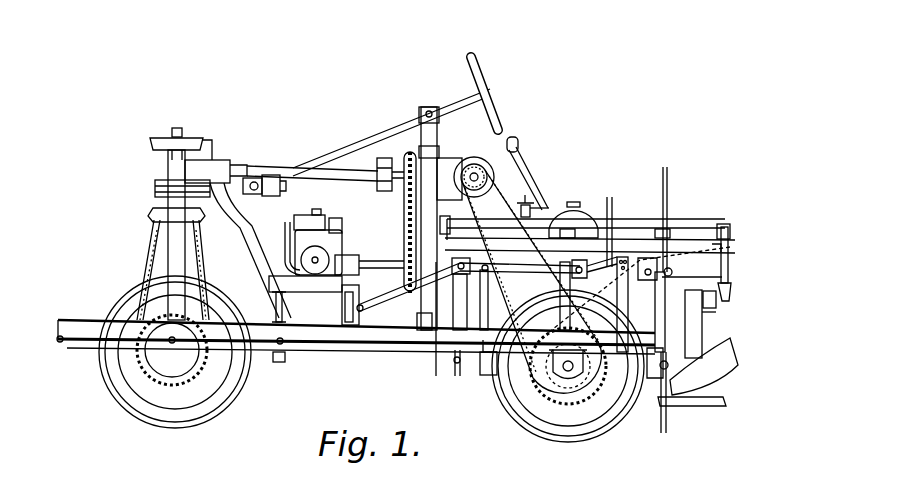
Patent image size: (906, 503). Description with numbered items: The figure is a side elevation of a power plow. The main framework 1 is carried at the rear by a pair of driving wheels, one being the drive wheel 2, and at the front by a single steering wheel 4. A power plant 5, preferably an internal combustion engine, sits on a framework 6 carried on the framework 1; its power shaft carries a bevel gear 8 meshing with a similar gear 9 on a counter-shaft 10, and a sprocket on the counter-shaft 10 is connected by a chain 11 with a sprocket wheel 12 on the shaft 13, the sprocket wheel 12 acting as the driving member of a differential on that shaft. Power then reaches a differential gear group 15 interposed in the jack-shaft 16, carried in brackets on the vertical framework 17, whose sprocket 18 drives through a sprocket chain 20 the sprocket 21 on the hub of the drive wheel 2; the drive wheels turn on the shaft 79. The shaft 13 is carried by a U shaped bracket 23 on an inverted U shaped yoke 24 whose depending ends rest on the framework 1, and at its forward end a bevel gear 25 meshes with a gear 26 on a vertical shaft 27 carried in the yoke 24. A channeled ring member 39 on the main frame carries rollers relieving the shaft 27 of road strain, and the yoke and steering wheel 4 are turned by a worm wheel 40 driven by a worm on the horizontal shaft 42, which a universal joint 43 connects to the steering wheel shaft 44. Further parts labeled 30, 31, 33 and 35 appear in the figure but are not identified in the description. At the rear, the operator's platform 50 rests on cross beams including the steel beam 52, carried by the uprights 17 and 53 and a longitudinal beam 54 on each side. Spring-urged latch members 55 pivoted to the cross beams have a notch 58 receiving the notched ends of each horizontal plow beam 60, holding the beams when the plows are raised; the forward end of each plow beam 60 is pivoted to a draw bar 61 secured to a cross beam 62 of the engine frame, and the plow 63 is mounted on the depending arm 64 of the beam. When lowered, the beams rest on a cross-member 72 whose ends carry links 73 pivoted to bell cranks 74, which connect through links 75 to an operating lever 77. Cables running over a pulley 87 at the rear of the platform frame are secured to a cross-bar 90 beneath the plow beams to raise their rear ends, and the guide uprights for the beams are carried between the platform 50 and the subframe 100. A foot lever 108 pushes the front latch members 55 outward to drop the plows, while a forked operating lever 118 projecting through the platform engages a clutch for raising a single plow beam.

The framework 1 is at (79, 322).
The driving wheel 2 is at (567, 437).
The steering wheel 4 is at (207, 411).
The power plant 5 is at (340, 243).
The framework 6 is at (312, 286).
The bevel gear 8 is at (280, 271).
The bevel gear 9 is at (345, 316).
The counter-shaft 10 is at (372, 256).
The chain 11 is at (404, 200).
The sprocket wheel 12 is at (411, 144).
The shaft 13 is at (328, 170).
The differential gear group 15 is at (470, 155).
The jack-shaft 16 is at (478, 174).
The vertical framework 17 is at (423, 330).
The sprocket 18 is at (520, 158).
The sprocket chain 20 is at (490, 372).
The sprocket 21 is at (587, 382).
The U shaped bracket 23 is at (208, 170).
The inverted U shaped yoke 24 is at (162, 208).
The bevel gear 25 is at (210, 141).
The bevel gear 26 is at (192, 140).
The vertical shaft 27 is at (177, 126).
The fork head 30 is at (150, 212).
The fork arm 31 is at (196, 230).
The fork chain 33 is at (152, 236).
The wheel hub 35 is at (172, 350).
The channeled ring member 39 is at (272, 354).
The worm wheel 40 is at (157, 187).
The horizontal shaft 42 is at (246, 179).
The universal joint 43 is at (270, 196).
The steering wheel shaft 44 is at (363, 138).
The operator's platform 50 is at (690, 226).
The steel beam 52 is at (718, 224).
The upright 53 is at (622, 310).
The longitudinal beam 54 is at (603, 250).
The latch member 55 is at (437, 334).
The notch 58 is at (731, 287).
The horizontal plow beam 60 is at (729, 248).
The draw bar 61 is at (378, 320).
The cross beam 62 is at (348, 320).
The plow 63 is at (692, 372).
The depending arm 64 is at (702, 330).
The cross-member 72 is at (456, 382).
The link 73 is at (710, 308).
The bell crank 74 is at (675, 219).
The link 75 is at (607, 222).
The operating lever 77 is at (540, 193).
The shaft 79 is at (566, 369).
The pulley 87 is at (692, 282).
The cross-bar 90 is at (703, 303).
The subframe 100 is at (492, 377).
The foot lever 108 is at (579, 207).
The operating lever 118 is at (555, 195).